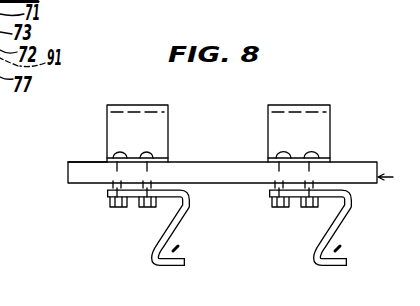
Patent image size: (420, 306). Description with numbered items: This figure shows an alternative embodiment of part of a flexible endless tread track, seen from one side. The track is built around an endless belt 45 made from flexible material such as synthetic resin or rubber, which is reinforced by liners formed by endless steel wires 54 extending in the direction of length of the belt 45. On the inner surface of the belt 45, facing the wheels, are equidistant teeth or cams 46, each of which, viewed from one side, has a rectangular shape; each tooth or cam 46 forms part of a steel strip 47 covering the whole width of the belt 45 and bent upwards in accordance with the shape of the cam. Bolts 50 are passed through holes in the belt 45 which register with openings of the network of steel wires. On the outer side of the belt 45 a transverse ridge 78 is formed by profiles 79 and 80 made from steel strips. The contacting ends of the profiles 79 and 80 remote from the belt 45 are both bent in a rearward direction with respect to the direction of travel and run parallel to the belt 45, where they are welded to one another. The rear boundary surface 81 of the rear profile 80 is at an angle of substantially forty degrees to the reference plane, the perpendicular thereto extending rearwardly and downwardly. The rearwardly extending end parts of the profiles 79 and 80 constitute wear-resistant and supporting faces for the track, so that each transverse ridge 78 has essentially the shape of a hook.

The endless belt 45 is at (79, 161).
The tooth or cam 46 is at (157, 107).
The steel strip 47 is at (139, 155).
The bolt 50 is at (114, 208).
The endless steel wire 54 is at (58, 172).
The transverse ridge 78 is at (151, 247).
The profile 79 is at (160, 226).
The rear profile 80 is at (188, 208).
The rear boundary surface 81 is at (176, 231).